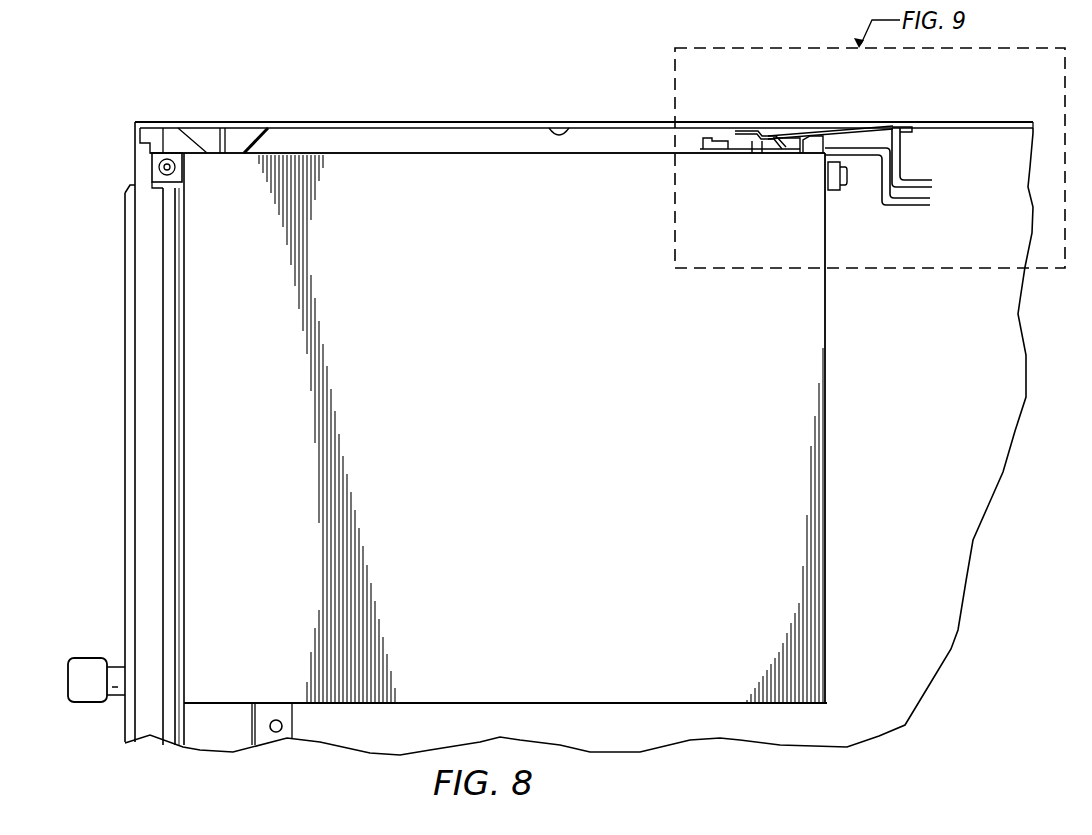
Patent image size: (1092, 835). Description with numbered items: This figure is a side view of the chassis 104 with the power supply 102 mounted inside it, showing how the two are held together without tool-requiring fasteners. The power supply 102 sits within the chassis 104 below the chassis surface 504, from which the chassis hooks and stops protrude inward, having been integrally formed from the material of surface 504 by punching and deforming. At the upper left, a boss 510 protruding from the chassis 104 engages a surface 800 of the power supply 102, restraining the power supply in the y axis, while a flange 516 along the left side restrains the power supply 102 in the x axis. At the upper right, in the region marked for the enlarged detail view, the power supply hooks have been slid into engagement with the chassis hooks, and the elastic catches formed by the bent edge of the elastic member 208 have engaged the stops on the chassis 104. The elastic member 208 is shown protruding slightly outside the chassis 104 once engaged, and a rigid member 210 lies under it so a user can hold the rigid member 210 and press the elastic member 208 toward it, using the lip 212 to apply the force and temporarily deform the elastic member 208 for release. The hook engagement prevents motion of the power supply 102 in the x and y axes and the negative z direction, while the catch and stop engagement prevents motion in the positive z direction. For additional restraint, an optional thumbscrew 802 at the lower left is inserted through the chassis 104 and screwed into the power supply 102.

The power supply 102 is at (520, 459).
The chassis 104 is at (440, 122).
The surface 504 is at (553, 122).
The surface 800 is at (357, 153).
The boss 510 is at (240, 155).
The flange 516 is at (185, 468).
The thumbscrew 802 is at (88, 658).
The elastic member 208 is at (885, 123).
The lip 212 is at (932, 182).
The rigid member 210 is at (905, 207).